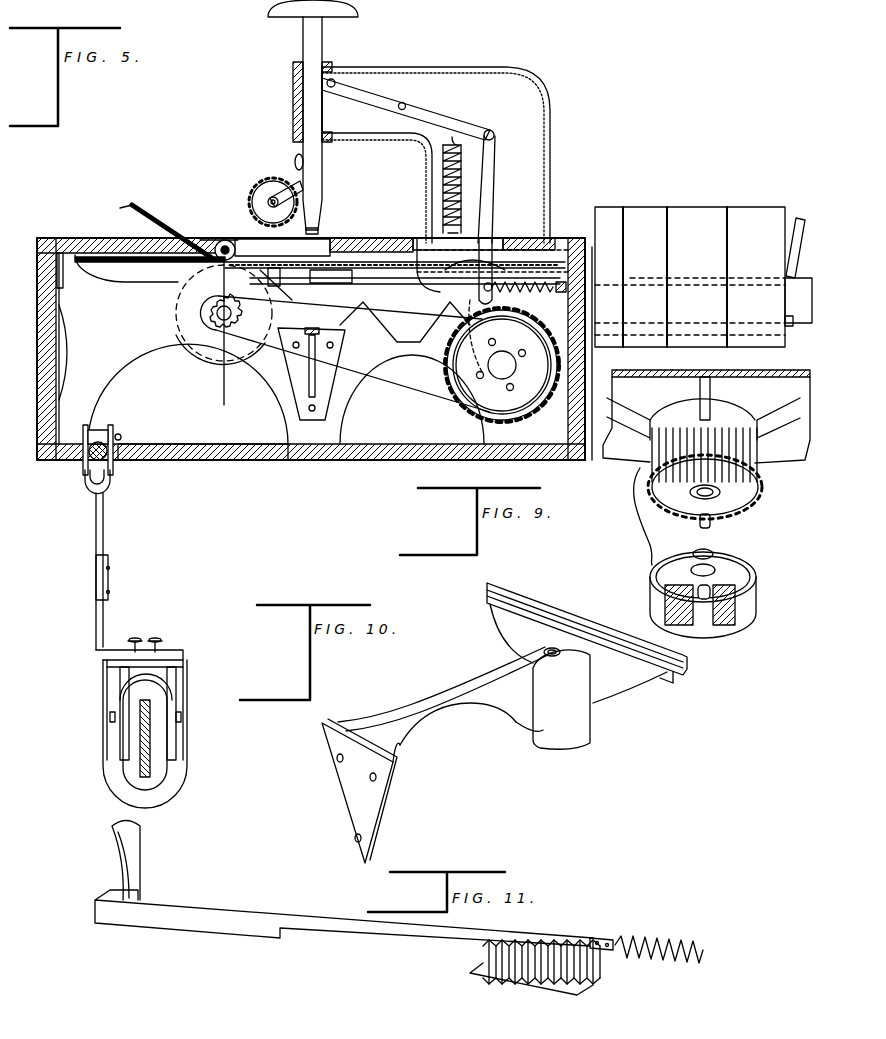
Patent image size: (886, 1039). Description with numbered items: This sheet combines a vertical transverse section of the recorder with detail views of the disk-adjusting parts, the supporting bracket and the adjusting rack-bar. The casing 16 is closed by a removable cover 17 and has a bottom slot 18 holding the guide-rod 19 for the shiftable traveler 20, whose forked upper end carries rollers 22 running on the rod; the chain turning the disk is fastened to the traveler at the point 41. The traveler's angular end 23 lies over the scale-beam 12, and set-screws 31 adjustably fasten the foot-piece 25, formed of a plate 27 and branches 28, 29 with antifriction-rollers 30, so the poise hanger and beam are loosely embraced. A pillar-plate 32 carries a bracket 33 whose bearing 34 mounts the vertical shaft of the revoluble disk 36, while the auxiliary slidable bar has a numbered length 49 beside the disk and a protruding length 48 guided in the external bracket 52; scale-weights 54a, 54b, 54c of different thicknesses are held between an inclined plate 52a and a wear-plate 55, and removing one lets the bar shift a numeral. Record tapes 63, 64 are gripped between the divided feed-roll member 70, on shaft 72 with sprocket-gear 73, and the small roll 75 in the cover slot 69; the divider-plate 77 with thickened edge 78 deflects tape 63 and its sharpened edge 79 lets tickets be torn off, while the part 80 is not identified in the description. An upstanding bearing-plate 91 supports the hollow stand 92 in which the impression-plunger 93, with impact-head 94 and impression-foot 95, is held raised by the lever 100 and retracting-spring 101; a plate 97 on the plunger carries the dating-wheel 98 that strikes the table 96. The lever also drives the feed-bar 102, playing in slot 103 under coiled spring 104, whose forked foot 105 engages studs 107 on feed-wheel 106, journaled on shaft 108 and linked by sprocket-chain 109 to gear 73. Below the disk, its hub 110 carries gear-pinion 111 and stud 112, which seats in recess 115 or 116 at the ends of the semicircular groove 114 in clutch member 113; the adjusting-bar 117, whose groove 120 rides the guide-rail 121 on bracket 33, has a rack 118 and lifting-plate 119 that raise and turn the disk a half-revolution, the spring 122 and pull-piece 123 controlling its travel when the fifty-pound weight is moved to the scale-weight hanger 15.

In FIG. 5, the scale-beam 12 is at (152, 772).
In FIG. 5, the scale-weight hanger 15 is at (228, 238).
In FIG. 5, the casing 16 is at (238, 461).
In FIG. 5, the cover 17 is at (80, 238).
In FIG. 5, the longitudinal slot 18 is at (122, 461).
In FIG. 5, the guide-rod 19 is at (83, 455).
In FIG. 5, the traveler 20 is at (106, 537).
In FIG. 5, the rollers 22 is at (100, 428).
In FIG. 5, the angular end 23 is at (176, 652).
In FIG. 5, the foot-piece 25 is at (187, 686).
In FIG. 5, the plate 27 is at (108, 667).
In FIG. 5, the branch 28 is at (178, 752).
In FIG. 5, the branch 29 is at (118, 748).
In FIG. 5, the antifriction-rollers 30 is at (110, 719).
In FIG. 5, the set-screws 31 is at (155, 638).
In FIG. 5, the pillar-plate 32 is at (140, 336).
In FIG. 5, the bracket 33 is at (328, 400).
In FIG. 10, the bracket 33 is at (443, 712).
In FIG. 10, the bearing 34 is at (567, 745).
In FIG. 9, the revoluble disk 36 is at (777, 387).
In FIG. 5, the chain attachment point 41 is at (122, 436).
In FIG. 5, the slidable bar 48 is at (811, 326).
In FIG. 5, the length of slidable bar 49 is at (350, 285).
In FIG. 5, the guide-bracket 52 is at (796, 290).
In FIG. 5, the inclined plate 52a is at (799, 220).
In FIG. 5, the scale-weight 54a is at (612, 213).
In FIG. 5, the scale-weight 54b is at (705, 216).
In FIG. 5, the scale-weight 54c is at (650, 216).
In FIG. 5, the wear-plate 55 is at (593, 352).
In FIG. 5, the record tape 63 is at (160, 221).
In FIG. 5, the record tape 64 is at (128, 270).
In FIG. 5, the slot 69 is at (205, 240).
In FIG. 5, the feed-roll member 70 is at (210, 350).
In FIG. 5, the horizontal shaft 72 is at (217, 314).
In FIG. 5, the sprocket-gear 73 is at (231, 325).
In FIG. 5, the feed-roll 75 is at (228, 244).
In FIG. 5, the divider-plate 77 is at (176, 263).
In FIG. 5, the thickened edge 78 is at (242, 277).
In FIG. 5, the cutting edge 79 is at (168, 231).
In FIG. 5, the block 80 is at (321, 278).
In FIG. 5, the bearing-plate 91 is at (560, 246).
In FIG. 5, the hollow stand 92 is at (548, 100).
In FIG. 5, the impression-plunger 93 is at (323, 40).
In FIG. 5, the impact-head 94 is at (283, 11).
In FIG. 5, the impression-foot 95 is at (326, 231).
In FIG. 5, the table 96 is at (280, 280).
In FIG. 5, the plate 97 is at (300, 193).
In FIG. 5, the dating impression-wheel 98 is at (276, 189).
In FIG. 5, the lever 100 is at (440, 118).
In FIG. 5, the retracting-spring 101 is at (442, 180).
In FIG. 5, the feed-bar 102 is at (493, 203).
In FIG. 5, the slot 103 is at (456, 248).
In FIG. 5, the coiled spring 104 is at (484, 287).
In FIG. 5, the forked foot 105 is at (446, 372).
In FIG. 5, the feed-wheel 106 is at (470, 388).
In FIG. 5, the pins 107 is at (496, 340).
In FIG. 5, the shaft 108 is at (509, 368).
In FIG. 5, the endless sprocket-chain 109 is at (288, 368).
In FIG. 9, the hub 110 is at (735, 414).
In FIG. 9, the gear-pinion 111 is at (760, 472).
In FIG. 9, the stud 112 is at (712, 523).
In FIG. 9, the clutch member 113 is at (746, 608).
In FIG. 9, the semicircular groove 114 is at (656, 576).
In FIG. 9, the locking-recess 115 is at (707, 602).
In FIG. 9, the locking-recess 116 is at (699, 553).
In FIG. 11, the adjusting-bar 117 is at (353, 931).
In FIG. 11, the rack-section 118 is at (503, 962).
In FIG. 11, the lifting-plate 119 is at (535, 982).
In FIG. 11, the groove 120 is at (603, 966).
In FIG. 10, the guide-rail 121 is at (664, 676).
In FIG. 11, the spring 122 is at (670, 938).
In FIG. 11, the pull-piece 123 is at (140, 861).